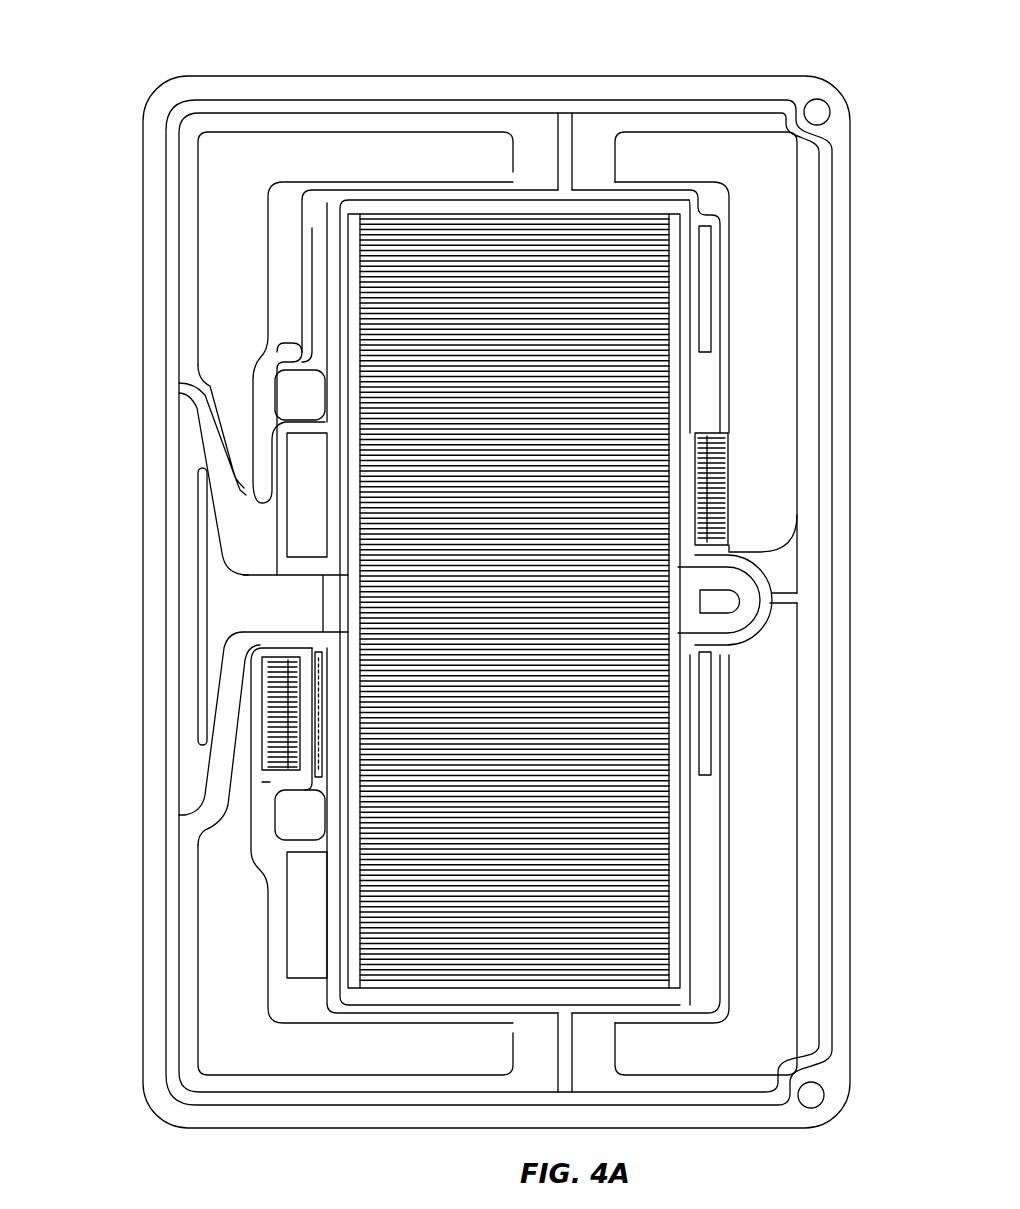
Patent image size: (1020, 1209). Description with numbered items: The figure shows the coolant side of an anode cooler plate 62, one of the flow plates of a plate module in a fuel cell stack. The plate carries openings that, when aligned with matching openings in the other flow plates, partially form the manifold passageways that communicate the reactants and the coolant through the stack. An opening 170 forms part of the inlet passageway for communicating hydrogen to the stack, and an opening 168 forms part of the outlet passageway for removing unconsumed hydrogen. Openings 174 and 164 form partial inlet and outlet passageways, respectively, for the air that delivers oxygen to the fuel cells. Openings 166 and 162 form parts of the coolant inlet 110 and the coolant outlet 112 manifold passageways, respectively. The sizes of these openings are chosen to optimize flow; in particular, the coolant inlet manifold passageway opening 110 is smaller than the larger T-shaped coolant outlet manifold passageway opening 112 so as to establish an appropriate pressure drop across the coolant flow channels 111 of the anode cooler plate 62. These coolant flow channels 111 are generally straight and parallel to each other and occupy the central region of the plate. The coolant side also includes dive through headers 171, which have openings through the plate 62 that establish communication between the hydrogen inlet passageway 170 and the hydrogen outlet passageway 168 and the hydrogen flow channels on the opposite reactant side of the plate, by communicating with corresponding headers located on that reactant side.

The anode cooler plate 62 is at (352, 70).
The coolant inlet manifold passageway opening 110 is at (730, 602).
The coolant flow channels 111 is at (675, 385).
The coolant outlet manifold passageway opening 112 is at (210, 603).
The opening 162 is at (335, 602).
The opening 164 is at (706, 839).
The opening 166 is at (688, 603).
The opening 168 is at (706, 362).
The opening 170 is at (355, 960).
The dive through headers 171 is at (270, 722).
The opening 174 is at (355, 248).